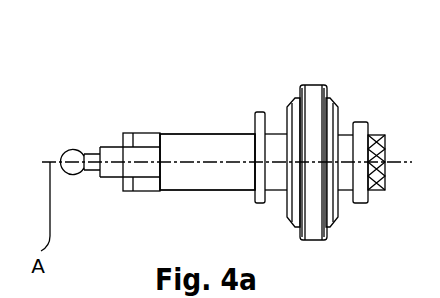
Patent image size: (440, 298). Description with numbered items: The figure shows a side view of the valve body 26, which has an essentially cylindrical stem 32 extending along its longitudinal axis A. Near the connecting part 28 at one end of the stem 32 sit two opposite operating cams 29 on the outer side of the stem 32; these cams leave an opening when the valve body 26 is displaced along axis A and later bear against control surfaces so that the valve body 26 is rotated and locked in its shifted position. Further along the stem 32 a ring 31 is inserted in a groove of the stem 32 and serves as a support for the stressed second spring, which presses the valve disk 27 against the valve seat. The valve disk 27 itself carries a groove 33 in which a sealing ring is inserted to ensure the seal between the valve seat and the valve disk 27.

The valve body 26 is at (207, 116).
The valve disk 27 is at (334, 100).
The connecting part 28 is at (77, 150).
The operating cams 29 is at (147, 143).
The ring 31 is at (259, 110).
The stem 32 is at (197, 172).
The groove 33 is at (313, 82).